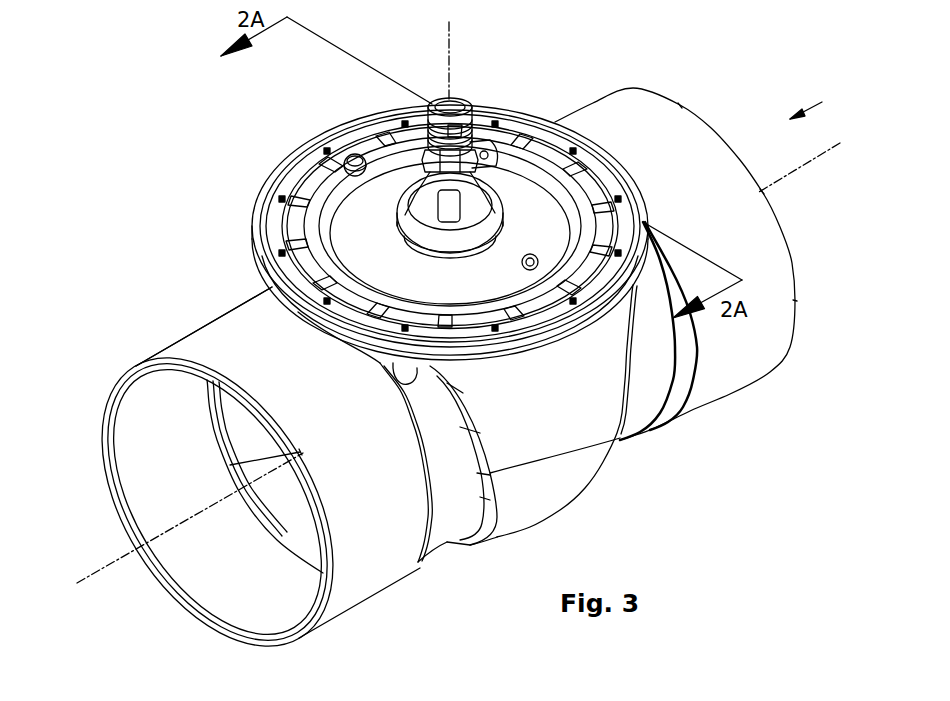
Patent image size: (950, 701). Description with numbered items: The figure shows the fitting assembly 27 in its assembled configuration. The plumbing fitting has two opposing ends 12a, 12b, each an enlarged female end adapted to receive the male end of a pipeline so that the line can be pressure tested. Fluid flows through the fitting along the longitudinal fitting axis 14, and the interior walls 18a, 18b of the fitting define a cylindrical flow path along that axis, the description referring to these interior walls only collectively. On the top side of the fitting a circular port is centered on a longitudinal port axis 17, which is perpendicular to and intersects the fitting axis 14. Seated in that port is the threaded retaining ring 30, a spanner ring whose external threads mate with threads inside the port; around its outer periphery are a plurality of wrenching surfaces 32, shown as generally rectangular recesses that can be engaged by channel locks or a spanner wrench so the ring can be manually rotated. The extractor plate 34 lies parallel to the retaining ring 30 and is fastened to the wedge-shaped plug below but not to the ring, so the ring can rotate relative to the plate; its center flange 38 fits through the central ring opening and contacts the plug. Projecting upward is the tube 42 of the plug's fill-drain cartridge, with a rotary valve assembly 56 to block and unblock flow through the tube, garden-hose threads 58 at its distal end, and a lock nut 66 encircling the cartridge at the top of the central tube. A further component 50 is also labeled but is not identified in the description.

The opposing end 12a is at (337, 605).
The opposing end 12b is at (747, 360).
The longitudinal fitting axis 14 is at (117, 560).
The longitudinal port axis 17 is at (453, 48).
The inlet opening 18a is at (143, 432).
The pipe outer surface 18b is at (182, 347).
The fitting assembly 27 is at (468, 337).
The retaining ring 30 is at (293, 202).
The wrenching surfaces 32 is at (532, 137).
The extractor plate 34 is at (317, 212).
The center flange 38 is at (313, 190).
The tube 42 is at (466, 98).
The clamp 50 is at (320, 140).
The rotary valve assembly 56 is at (440, 196).
The threads 58 is at (417, 112).
The lock nut 66 is at (445, 222).